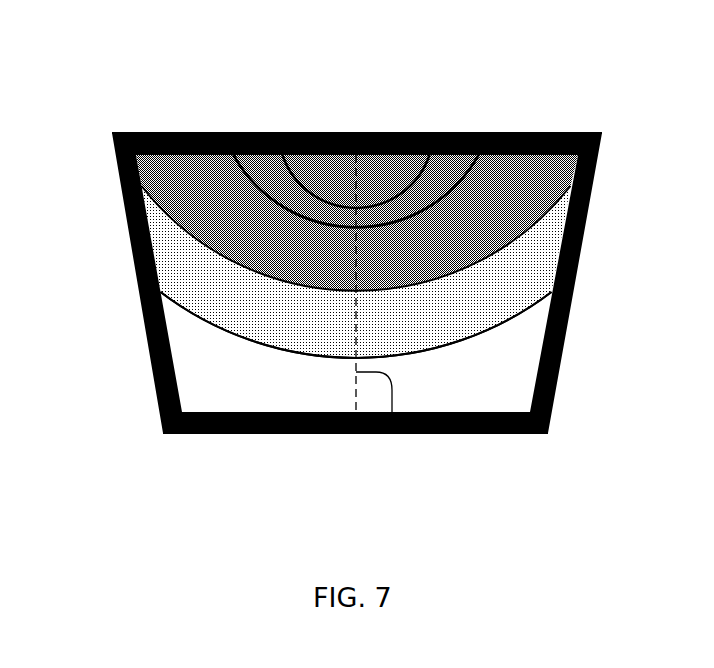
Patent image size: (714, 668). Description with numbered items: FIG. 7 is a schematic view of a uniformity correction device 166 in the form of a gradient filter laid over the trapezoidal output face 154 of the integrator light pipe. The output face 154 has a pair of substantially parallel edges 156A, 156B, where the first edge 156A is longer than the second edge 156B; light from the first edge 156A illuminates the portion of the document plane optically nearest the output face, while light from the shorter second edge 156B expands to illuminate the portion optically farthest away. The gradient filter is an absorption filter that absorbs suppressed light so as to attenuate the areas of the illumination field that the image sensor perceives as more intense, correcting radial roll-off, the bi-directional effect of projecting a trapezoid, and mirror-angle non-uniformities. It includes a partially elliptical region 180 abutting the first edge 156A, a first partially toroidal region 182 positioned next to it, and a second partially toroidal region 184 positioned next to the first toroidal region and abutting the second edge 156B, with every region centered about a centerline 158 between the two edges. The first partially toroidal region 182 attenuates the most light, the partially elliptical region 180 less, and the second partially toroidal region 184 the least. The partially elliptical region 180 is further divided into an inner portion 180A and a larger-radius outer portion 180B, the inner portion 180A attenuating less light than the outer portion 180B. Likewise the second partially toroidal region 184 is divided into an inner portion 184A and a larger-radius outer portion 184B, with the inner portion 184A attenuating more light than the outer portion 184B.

The output face 154 is at (140, 300).
The first edge 156A is at (550, 133).
The second edge 156B is at (272, 433).
The centerline 158 is at (400, 433).
The uniformity correction device 166 is at (578, 454).
The partially elliptical region 180 is at (300, 133).
The inner portion 180A is at (380, 170).
The outer portion 180B is at (447, 167).
The first partially toroidal region 182 is at (192, 177).
The second partially toroidal region 184 is at (192, 316).
The inner portion 184A is at (533, 260).
The outer portion 184B is at (504, 357).